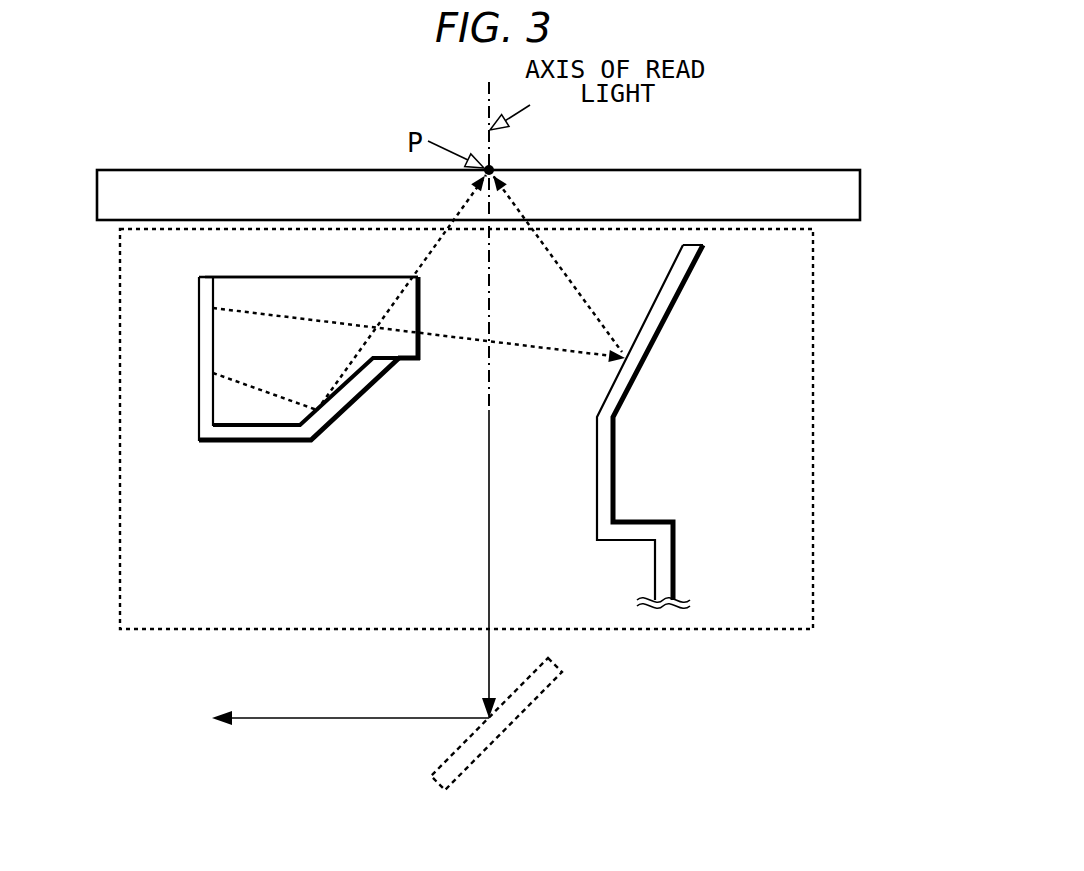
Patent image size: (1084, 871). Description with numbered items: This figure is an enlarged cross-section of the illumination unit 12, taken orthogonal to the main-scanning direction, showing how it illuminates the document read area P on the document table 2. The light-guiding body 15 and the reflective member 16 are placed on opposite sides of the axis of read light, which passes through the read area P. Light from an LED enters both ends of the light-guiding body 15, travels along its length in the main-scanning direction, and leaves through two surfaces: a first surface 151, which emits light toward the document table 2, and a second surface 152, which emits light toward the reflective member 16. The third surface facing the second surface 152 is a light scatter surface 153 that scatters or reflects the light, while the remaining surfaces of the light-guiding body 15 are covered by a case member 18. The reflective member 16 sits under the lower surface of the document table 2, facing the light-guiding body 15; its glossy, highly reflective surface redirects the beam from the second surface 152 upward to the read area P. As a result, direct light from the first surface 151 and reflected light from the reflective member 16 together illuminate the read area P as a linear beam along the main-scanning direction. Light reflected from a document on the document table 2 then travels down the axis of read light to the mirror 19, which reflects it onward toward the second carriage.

The document table 2 is at (633, 170).
The illumination unit 12 is at (828, 422).
The light-guiding body 15 is at (302, 363).
The first surface 151 is at (285, 277).
The second surface 152 is at (421, 308).
The light scatter surface 153 is at (213, 330).
The reflective member 16 is at (645, 318).
The case member 18 is at (250, 443).
The mirror 19 is at (537, 698).